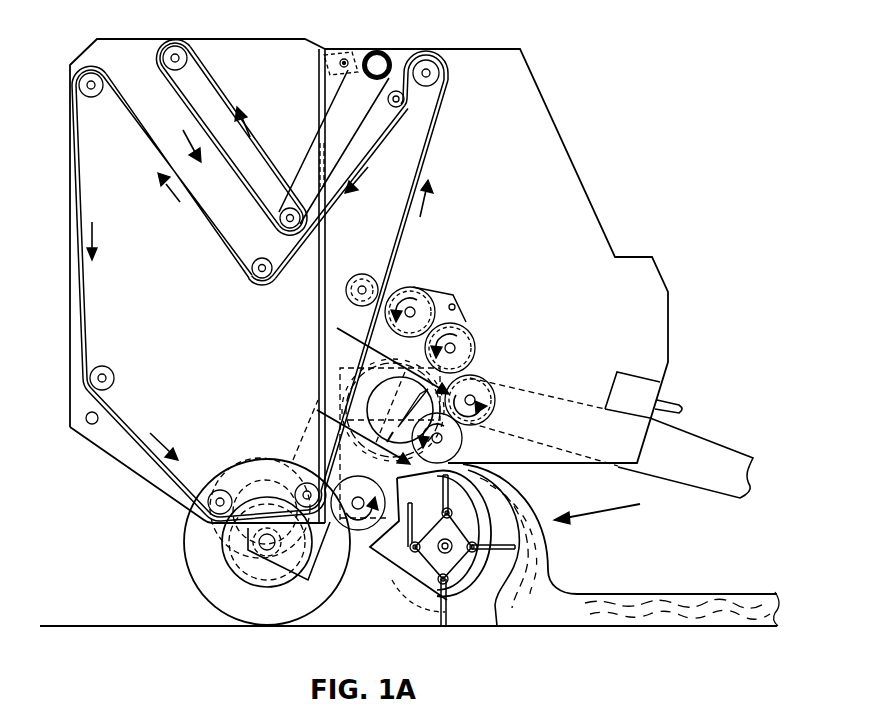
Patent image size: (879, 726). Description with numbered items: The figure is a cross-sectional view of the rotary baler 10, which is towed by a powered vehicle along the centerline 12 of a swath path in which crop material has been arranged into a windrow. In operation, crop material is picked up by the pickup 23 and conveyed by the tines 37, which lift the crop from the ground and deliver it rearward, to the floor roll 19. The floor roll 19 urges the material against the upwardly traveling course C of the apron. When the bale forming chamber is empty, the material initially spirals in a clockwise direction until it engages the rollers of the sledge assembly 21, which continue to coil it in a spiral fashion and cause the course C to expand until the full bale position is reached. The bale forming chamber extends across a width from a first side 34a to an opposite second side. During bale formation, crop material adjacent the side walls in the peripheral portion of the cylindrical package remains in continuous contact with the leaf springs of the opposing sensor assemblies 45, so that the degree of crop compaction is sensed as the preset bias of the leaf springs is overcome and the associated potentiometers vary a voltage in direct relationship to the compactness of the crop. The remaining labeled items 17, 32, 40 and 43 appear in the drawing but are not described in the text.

The rotary baler 10 is at (569, 64).
The centerline 12 is at (200, 570).
The pickup tines 17 is at (432, 602).
The floor roll 19 is at (282, 652).
The sledge assembly 21 is at (474, 293).
The pickup 23 is at (597, 512).
The bale forming belts 32 is at (74, 325).
The first side 34a is at (528, 155).
The tines 37 is at (292, 490).
The belt tensioning roller 40 is at (397, 108).
The idler roller 43 is at (262, 280).
The sensor assemblies 45 is at (386, 390).
The upwardly traveling course C is at (317, 410).